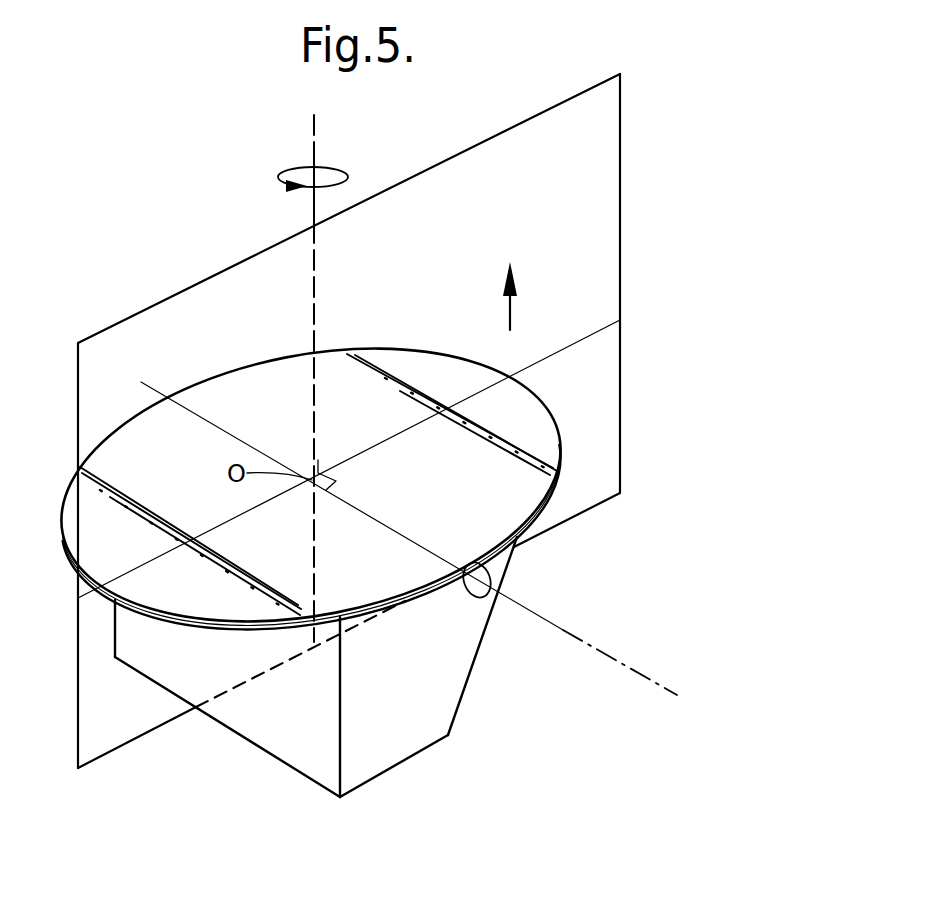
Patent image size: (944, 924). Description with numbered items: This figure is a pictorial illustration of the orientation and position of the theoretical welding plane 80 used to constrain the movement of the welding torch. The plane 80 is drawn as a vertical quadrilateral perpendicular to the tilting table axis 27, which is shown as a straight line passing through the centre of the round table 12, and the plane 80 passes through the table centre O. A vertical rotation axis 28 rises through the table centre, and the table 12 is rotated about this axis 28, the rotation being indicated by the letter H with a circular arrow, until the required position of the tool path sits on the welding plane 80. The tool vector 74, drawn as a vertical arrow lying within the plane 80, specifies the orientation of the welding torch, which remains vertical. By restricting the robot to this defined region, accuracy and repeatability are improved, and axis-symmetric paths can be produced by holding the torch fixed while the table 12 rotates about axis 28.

The table 12 is at (552, 490).
The tilting table axis 27 is at (537, 617).
The table rotation axis 28 is at (316, 158).
The tool vector 74 is at (511, 308).
The theoretical welding plane 80 is at (620, 185).